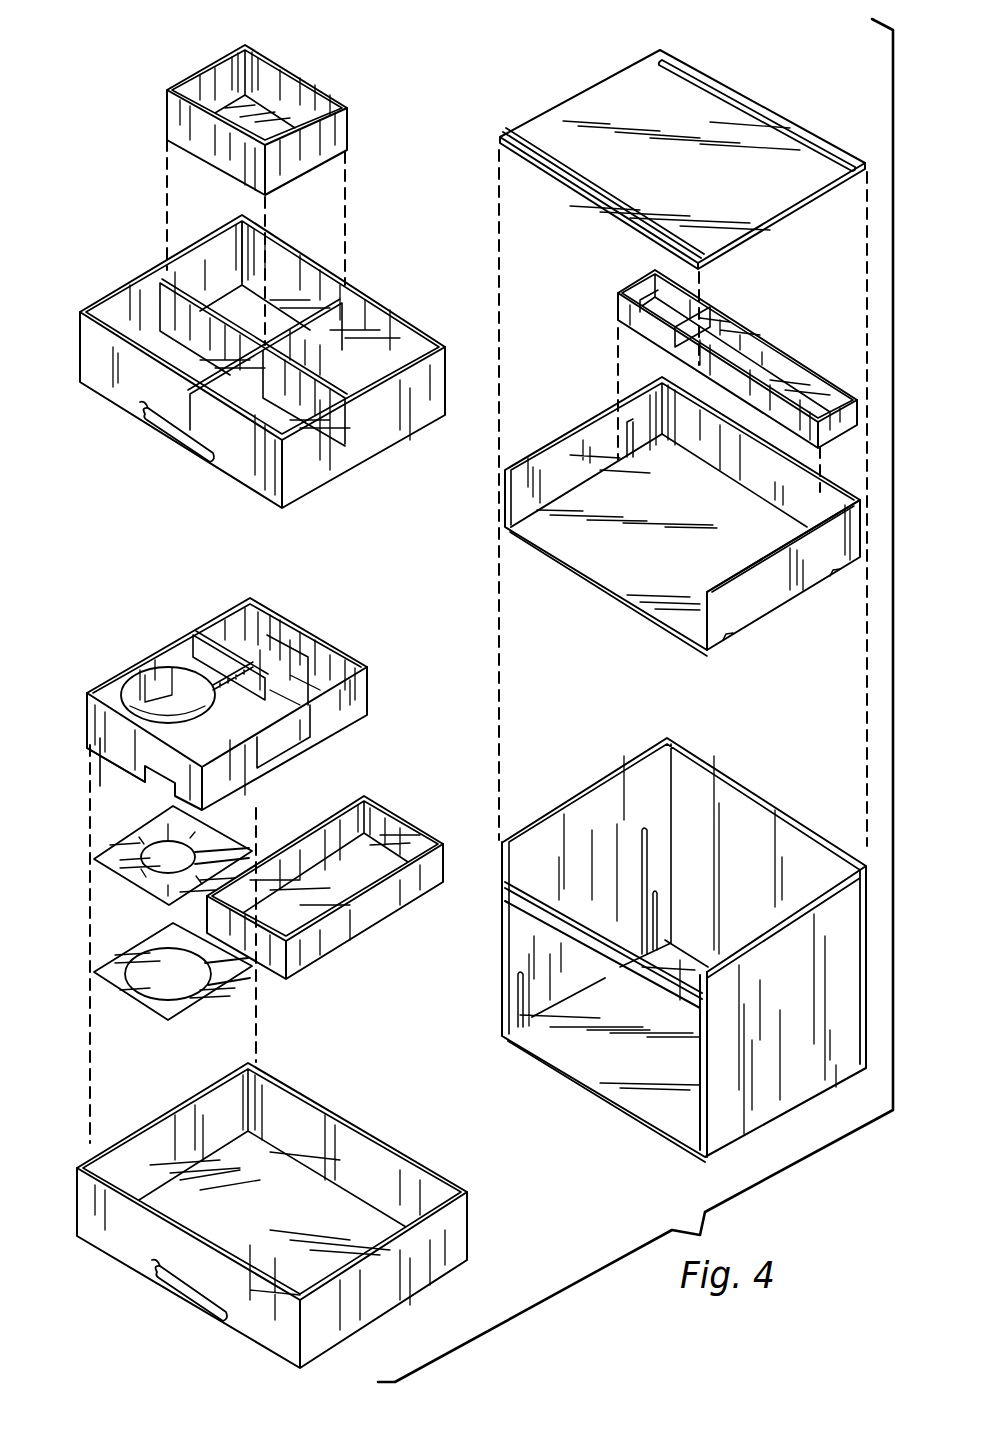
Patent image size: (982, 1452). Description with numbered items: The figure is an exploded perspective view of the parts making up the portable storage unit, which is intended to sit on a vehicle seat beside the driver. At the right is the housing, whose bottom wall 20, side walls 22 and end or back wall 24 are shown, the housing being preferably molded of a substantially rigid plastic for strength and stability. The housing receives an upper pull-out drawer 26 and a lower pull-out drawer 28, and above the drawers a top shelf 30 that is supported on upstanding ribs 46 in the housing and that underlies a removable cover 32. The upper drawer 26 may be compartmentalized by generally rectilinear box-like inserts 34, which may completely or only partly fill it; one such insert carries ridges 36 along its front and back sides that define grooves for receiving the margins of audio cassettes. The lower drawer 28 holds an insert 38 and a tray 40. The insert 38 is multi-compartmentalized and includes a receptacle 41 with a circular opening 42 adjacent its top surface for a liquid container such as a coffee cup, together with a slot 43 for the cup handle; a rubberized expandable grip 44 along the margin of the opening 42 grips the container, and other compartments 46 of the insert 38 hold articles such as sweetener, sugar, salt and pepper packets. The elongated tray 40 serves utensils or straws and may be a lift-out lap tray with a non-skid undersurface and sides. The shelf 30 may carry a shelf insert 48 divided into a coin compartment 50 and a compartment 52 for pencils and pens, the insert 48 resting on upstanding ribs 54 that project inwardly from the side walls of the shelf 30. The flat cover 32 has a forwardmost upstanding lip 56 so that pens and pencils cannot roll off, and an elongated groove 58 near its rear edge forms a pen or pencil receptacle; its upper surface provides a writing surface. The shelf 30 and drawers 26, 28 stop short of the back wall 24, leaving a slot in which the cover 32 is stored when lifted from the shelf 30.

The bottom wall 20 is at (668, 948).
The side walls 22 is at (584, 790).
The end wall 24 is at (739, 776).
The upper pull-out drawer 26 is at (103, 373).
The lower pull-out drawer 28 is at (127, 1137).
The upper shelf 30 is at (682, 516).
The cover 32 is at (663, 150).
The box-like insert 34 is at (228, 104).
The ridges 36 is at (262, 58).
The insert 38 is at (353, 793).
The tray insert 40 is at (400, 909).
The receptacle 41 is at (98, 752).
The circular opening 42 is at (121, 693).
The slot 43 is at (198, 668).
The rubberized expandable grip 44 is at (114, 869).
The compartments / upstanding ribs 46 is at (236, 614).
The shelf insert 48 is at (706, 350).
The coin compartment 50 is at (640, 306).
The compartment for elongated articles 52 is at (790, 368).
The upstanding ribs 54 is at (635, 440).
The upstanding lip 56 is at (537, 152).
The elongated groove 58 is at (682, 70).